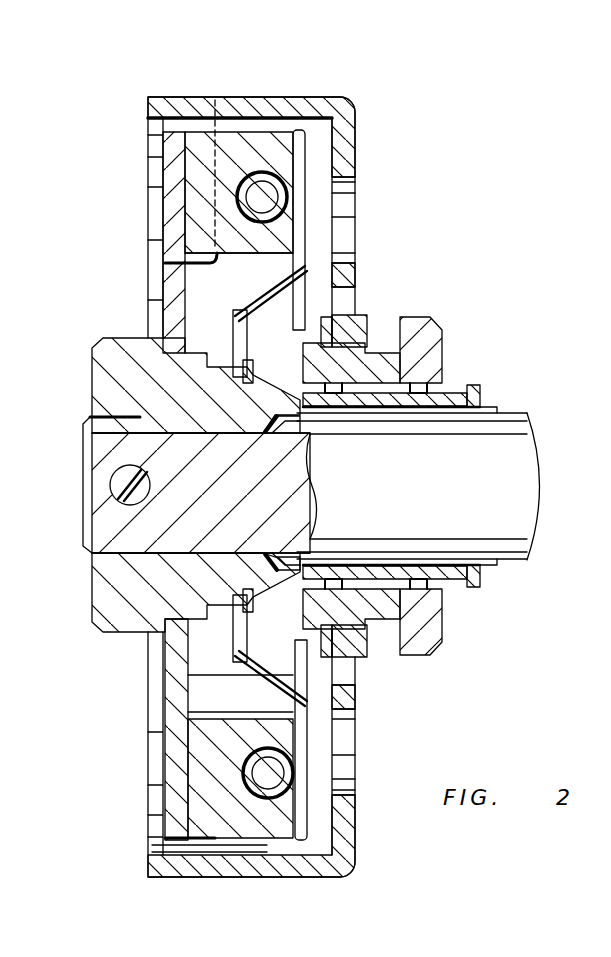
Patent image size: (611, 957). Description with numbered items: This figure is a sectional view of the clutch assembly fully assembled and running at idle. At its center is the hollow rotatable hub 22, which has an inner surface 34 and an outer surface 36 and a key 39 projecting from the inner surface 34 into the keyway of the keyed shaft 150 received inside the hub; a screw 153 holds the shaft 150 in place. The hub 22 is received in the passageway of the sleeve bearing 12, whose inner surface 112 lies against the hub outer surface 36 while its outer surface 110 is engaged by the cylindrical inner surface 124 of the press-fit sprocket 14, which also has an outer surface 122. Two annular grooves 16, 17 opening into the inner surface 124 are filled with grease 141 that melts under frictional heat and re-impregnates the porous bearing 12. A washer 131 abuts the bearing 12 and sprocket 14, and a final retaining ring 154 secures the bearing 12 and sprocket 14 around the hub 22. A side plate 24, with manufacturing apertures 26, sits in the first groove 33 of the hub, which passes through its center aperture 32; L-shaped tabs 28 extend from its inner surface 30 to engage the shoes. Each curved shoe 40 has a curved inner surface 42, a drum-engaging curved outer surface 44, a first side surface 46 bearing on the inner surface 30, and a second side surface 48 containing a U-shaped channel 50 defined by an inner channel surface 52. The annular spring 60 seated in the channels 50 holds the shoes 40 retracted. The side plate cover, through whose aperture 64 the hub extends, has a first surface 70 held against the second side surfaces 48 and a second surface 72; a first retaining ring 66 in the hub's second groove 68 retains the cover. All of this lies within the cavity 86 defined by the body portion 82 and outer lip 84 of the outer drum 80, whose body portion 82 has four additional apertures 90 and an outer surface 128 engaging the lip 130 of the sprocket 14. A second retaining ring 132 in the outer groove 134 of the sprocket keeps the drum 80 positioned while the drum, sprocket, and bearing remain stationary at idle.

The sleeve bearing 12 is at (468, 390).
The sprocket 14 is at (444, 322).
The annular groove 16 is at (306, 366).
The annular groove 17 is at (443, 390).
The rotatable hub 22 is at (90, 377).
The side plate 24 is at (164, 165).
The apertures 26 is at (165, 263).
The L-shaped tabs 28 is at (215, 100).
The inner surface 30 is at (186, 695).
The center aperture 32 is at (165, 355).
The first groove 33 is at (165, 643).
The inner surface 34 is at (505, 423).
The outer surface 36 is at (492, 570).
The key 39 is at (92, 418).
The curved shoes 40 is at (273, 843).
The curved inner surface 42 is at (267, 719).
The curved outer surface 44 is at (215, 860).
The first side surface 46 is at (186, 838).
The second side surface 48 is at (312, 737).
The U-shaped channel 50 is at (298, 750).
The inner channel surface 52 is at (296, 180).
The annular spring 60 is at (277, 175).
The aperture 64 is at (224, 370).
The first retaining ring 66 is at (248, 362).
The second groove 68 is at (238, 380).
The first surface 70 is at (307, 96).
The second surface 72 is at (320, 96).
The outer drum 80 is at (355, 100).
The body portion 82 is at (356, 178).
The outer lip 84 is at (157, 99).
The cavity 86 is at (146, 125).
The additional apertures 90 is at (356, 190).
The outer surface 110 is at (383, 560).
The inner surface 112 is at (372, 410).
The outer surface 122 is at (378, 593).
The cylindrical inner surface 124 is at (422, 400).
The outer surface 128 is at (357, 812).
The lip 130 is at (358, 316).
The washer 131 is at (275, 423).
The second retaining ring 132 is at (328, 317).
The outer groove 134 is at (367, 330).
The grease 141 is at (338, 410).
The keyed shaft 150 is at (512, 560).
The screw 153 is at (120, 482).
The final retaining ring 154 is at (482, 405).